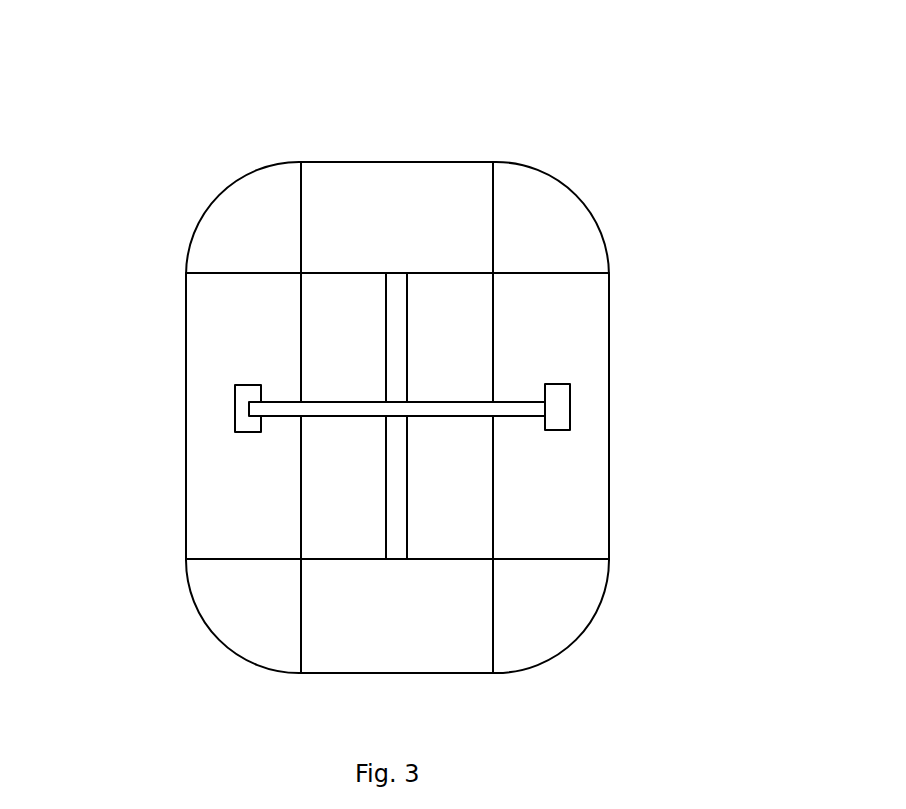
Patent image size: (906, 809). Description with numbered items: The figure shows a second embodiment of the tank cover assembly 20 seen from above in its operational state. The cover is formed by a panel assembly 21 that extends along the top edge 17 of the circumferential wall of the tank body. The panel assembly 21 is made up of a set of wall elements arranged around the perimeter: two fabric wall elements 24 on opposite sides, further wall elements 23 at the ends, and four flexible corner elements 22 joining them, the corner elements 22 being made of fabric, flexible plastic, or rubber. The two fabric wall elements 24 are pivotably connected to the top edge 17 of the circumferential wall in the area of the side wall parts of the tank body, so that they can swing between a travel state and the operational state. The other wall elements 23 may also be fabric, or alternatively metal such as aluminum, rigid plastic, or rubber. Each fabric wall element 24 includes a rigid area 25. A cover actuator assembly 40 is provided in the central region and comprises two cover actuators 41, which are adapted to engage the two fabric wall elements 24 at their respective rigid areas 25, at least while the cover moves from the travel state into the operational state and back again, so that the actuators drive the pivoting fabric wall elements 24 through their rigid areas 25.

The tank cover assembly 20 is at (412, 379).
The panel assembly 21 is at (462, 377).
The corner elements 22 is at (421, 370).
The wall elements 23 is at (400, 379).
The fabric wall element 24 is at (380, 417).
The rigid area 25 is at (388, 422).
The top edge 17 is at (635, 417).
The cover actuator assembly 40 is at (452, 325).
The cover actuators 41 is at (397, 254).